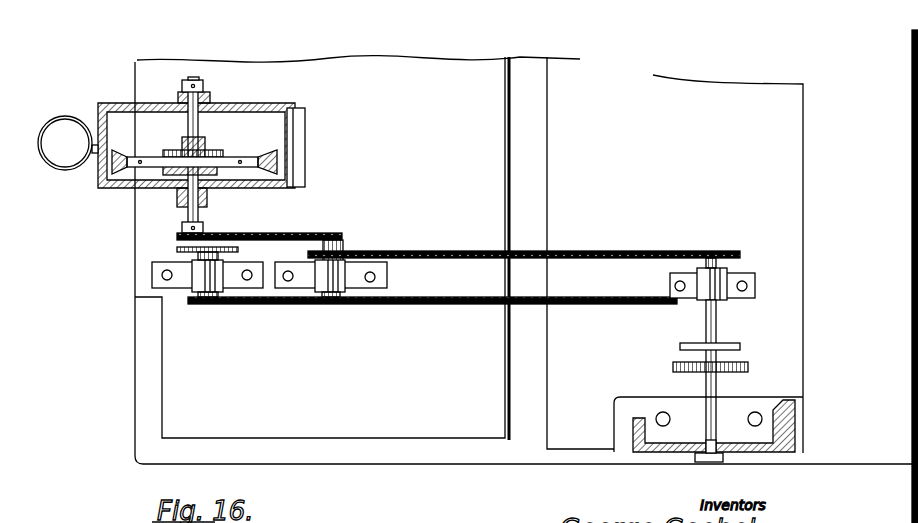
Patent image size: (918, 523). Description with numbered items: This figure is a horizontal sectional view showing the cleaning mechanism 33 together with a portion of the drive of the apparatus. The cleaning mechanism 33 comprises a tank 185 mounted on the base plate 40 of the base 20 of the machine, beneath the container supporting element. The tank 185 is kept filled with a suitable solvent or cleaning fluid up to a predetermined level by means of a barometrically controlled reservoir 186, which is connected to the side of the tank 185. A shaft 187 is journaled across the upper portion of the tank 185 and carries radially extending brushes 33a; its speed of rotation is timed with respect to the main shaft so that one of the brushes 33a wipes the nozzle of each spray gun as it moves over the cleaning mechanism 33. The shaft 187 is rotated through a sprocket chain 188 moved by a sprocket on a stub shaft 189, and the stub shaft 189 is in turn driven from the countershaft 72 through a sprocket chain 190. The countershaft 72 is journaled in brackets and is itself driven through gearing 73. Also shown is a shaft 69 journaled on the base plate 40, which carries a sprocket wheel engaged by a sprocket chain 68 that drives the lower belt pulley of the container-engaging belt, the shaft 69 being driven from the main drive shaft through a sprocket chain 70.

The base 20 is at (455, 448).
The cleaning mechanism 33 is at (263, 107).
The brushes 33a is at (283, 150).
The base plate 40 is at (340, 360).
The sprocket chain 68 is at (238, 250).
The shaft 69 is at (213, 300).
The sprocket chain 70 is at (413, 303).
The countershaft 72 is at (707, 325).
The gearing 73 is at (748, 363).
The tank 185 is at (288, 167).
The barometrically controlled reservoir 186 is at (80, 100).
The shaft 187 is at (197, 130).
The sprocket chain 188 is at (240, 218).
The stub shaft 189 is at (343, 247).
The sprocket chain 190 is at (637, 241).